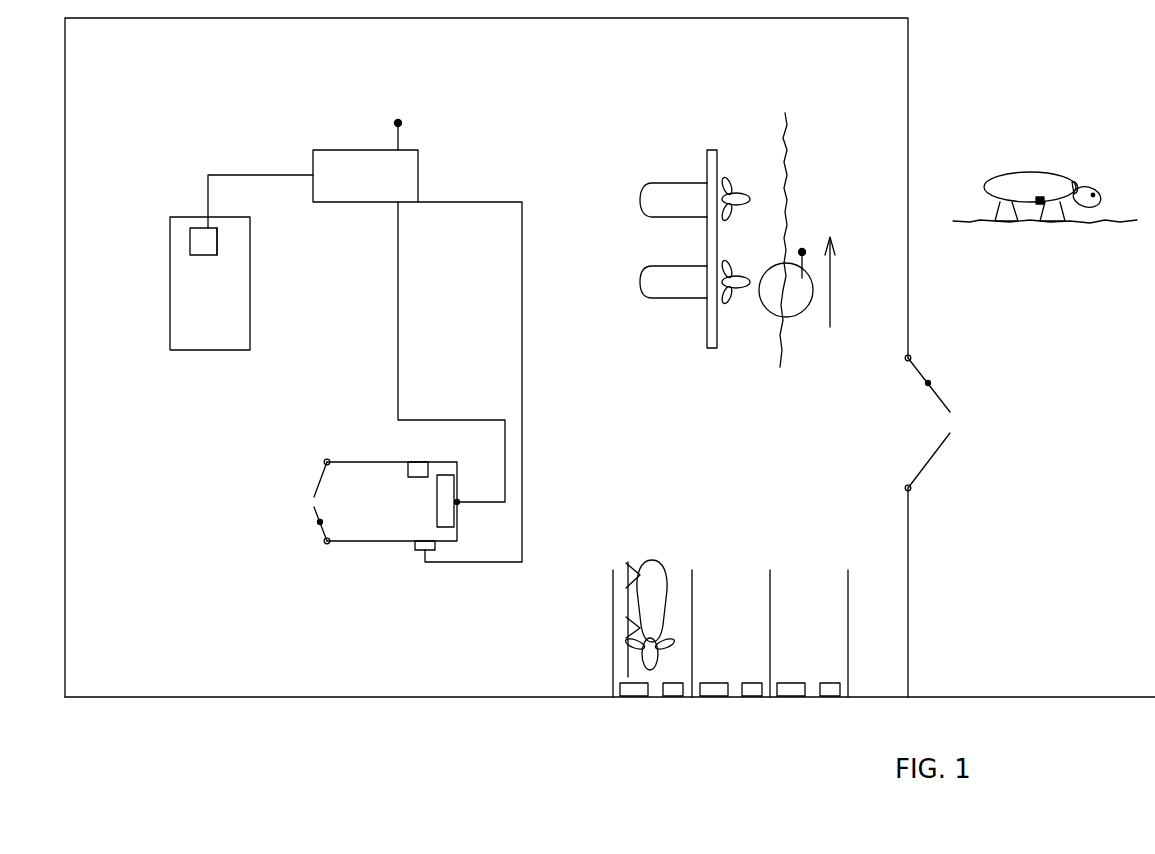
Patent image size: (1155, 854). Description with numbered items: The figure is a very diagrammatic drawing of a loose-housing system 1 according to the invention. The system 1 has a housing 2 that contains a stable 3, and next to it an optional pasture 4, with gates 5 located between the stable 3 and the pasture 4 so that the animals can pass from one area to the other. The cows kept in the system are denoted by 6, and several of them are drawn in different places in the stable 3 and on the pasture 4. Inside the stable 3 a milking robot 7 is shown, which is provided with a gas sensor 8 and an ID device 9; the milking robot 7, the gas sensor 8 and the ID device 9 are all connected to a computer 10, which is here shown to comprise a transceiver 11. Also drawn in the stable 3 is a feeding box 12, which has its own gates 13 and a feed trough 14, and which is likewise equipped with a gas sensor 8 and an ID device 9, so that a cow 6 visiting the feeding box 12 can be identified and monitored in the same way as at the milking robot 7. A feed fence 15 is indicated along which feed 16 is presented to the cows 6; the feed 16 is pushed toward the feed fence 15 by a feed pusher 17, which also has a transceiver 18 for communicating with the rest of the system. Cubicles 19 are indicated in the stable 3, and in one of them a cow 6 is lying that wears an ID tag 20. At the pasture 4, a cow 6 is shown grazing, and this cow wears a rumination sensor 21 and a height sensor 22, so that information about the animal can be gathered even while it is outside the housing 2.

The system 1 is at (437, 713).
The housing 2 is at (184, 697).
The stable 3 is at (622, 437).
The pasture 4 is at (1068, 577).
The gates 5 is at (928, 383).
The cows 6 is at (655, 203).
The milking robot 7 is at (200, 320).
The gas sensor 8 is at (200, 243).
The ID device 9 is at (220, 245).
The computer 10 is at (335, 160).
The transceiver 11 is at (398, 123).
The feeding box 12 is at (380, 516).
The gates 13 is at (320, 522).
The feed trough 14 is at (457, 502).
The feed fence 15 is at (711, 167).
The feed 16 is at (768, 254).
The feed pusher 17 is at (785, 295).
The transceiver 18 is at (802, 252).
The cubicles 19 is at (825, 600).
The ID tag 20 is at (643, 643).
The rumination sensor 21 is at (1073, 185).
The height sensor 22 is at (1042, 204).